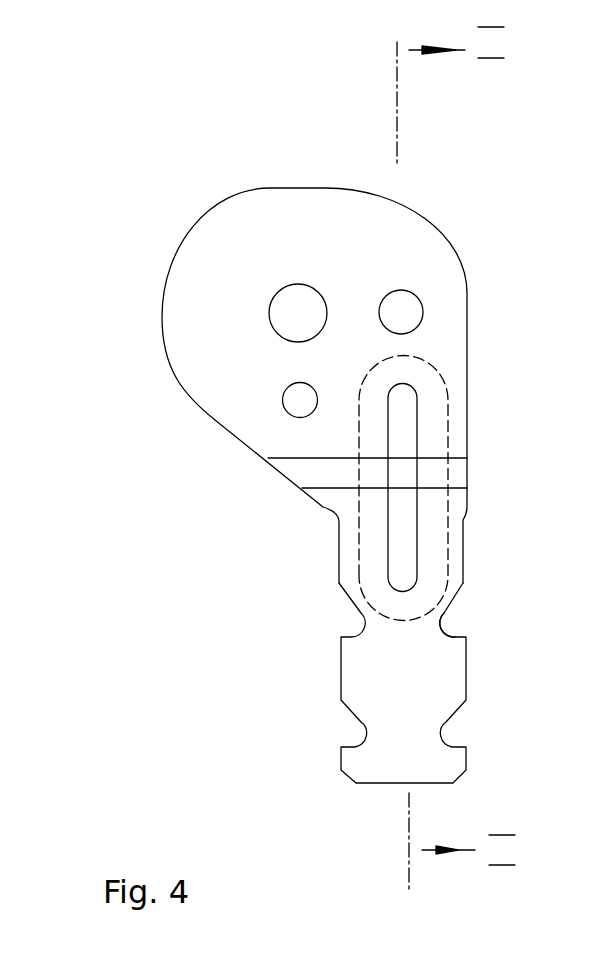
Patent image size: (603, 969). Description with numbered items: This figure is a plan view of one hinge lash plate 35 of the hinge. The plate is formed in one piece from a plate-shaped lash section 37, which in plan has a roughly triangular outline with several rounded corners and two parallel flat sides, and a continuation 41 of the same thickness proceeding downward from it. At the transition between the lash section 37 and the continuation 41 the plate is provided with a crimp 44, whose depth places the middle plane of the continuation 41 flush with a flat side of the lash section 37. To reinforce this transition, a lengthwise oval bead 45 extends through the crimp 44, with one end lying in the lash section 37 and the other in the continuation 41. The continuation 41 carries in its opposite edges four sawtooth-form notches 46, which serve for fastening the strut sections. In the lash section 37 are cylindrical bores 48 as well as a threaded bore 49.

The hinge lash plate 35 is at (160, 117).
The lash section 37 is at (110, 322).
The continuation 41 is at (302, 735).
The crimp 44 is at (462, 473).
The lengthwise oval bead 45 is at (410, 427).
The notches 46 is at (443, 606).
The cylindrical bore 48 is at (283, 295).
The threaded bore 49 is at (290, 410).